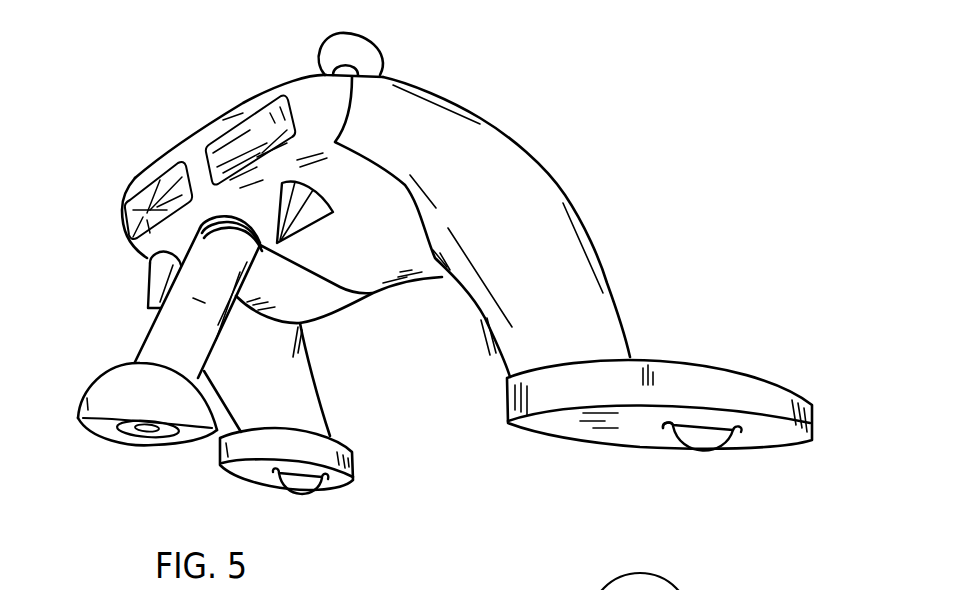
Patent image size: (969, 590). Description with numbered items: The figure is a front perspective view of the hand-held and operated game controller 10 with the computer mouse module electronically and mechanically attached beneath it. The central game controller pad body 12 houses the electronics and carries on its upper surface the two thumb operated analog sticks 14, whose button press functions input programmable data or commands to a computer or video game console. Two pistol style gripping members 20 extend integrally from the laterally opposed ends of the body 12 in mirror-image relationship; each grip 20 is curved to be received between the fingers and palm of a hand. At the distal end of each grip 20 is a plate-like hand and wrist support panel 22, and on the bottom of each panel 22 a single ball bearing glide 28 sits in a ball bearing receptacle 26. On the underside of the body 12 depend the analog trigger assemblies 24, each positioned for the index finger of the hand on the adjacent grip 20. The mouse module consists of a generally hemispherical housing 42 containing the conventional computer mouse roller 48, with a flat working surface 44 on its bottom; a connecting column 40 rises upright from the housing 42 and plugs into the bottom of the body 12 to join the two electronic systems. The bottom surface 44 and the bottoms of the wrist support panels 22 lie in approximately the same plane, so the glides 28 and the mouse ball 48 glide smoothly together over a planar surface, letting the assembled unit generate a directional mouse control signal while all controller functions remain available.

The game pad controller 10 is at (170, 121).
The game controller pad body 12 is at (128, 185).
The thumb operated analog stick 14 is at (323, 53).
The pistol style gripping member 20 is at (540, 200).
The hand and wrist support panel 22 is at (357, 462).
The analog trigger assembly 24 is at (157, 277).
The ball bearing receptacle 26 is at (667, 430).
The ball bearing glide 28 is at (530, 495).
The connecting column 40 is at (163, 337).
The mouse housing 42 is at (123, 420).
The flat working surface 44 is at (98, 430).
The computer mouse roller 48 is at (142, 430).